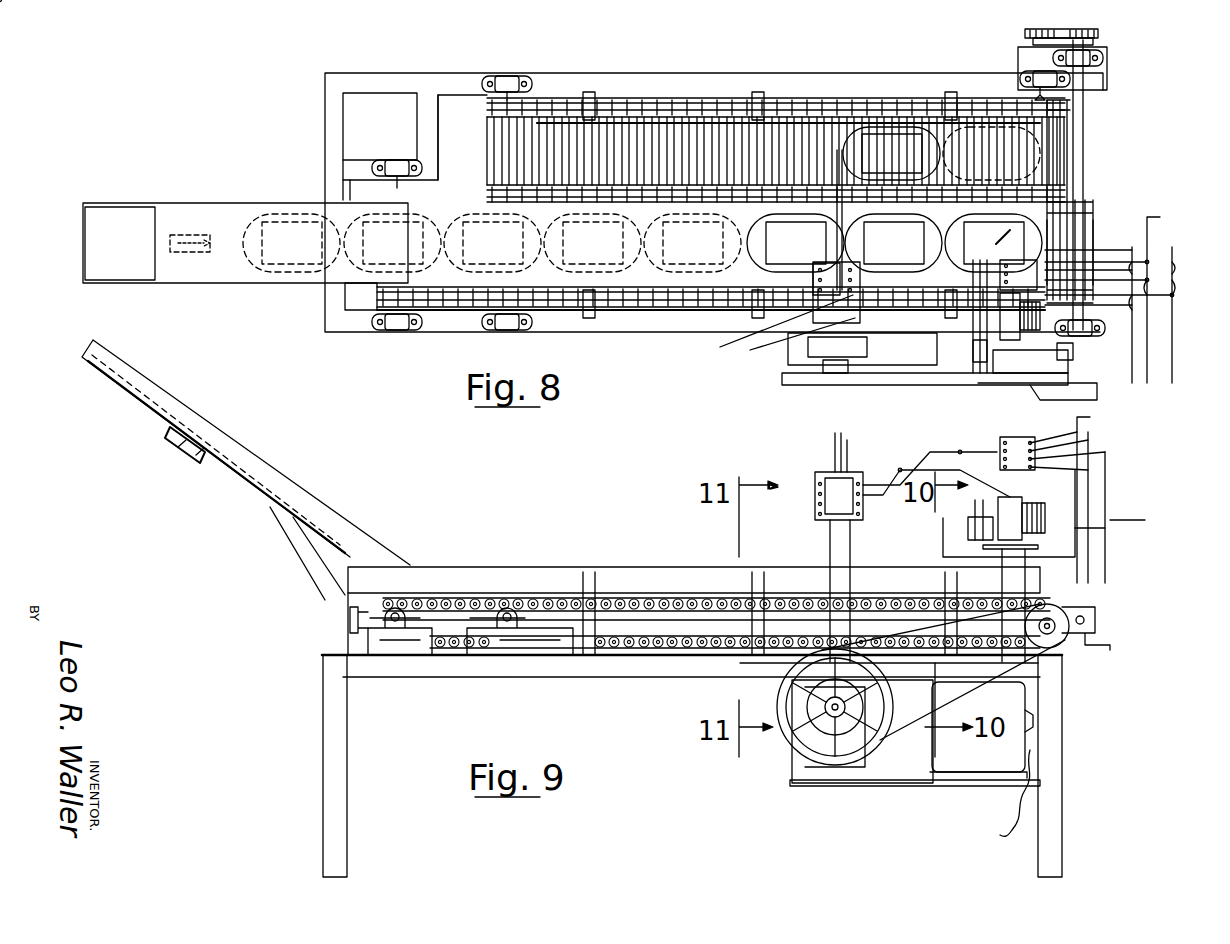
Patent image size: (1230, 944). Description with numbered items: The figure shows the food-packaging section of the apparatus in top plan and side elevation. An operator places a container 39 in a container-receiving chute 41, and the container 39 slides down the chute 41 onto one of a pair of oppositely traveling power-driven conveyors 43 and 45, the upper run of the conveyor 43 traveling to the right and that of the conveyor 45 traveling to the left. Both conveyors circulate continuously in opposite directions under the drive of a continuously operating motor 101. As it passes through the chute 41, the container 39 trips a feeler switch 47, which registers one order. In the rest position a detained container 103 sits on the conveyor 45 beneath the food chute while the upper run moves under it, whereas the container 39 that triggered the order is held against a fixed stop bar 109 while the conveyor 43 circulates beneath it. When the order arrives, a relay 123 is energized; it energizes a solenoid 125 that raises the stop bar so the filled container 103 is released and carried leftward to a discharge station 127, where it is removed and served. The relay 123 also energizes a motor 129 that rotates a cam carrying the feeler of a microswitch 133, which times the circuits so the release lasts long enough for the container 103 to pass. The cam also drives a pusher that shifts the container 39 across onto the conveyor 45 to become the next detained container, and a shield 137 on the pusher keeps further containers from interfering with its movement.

In FIG. 8, the container 39 is at (1087, 160).
In FIG. 9, the container-receiving chute 41 is at (175, 407).
In FIG. 8, the conveyor 43 is at (1083, 233).
In FIG. 9, the conveyor 43 is at (713, 603).
In FIG. 8, the conveyor 45 is at (618, 145).
In FIG. 9, the feeler switch 47 is at (170, 455).
In FIG. 9, the motor 101 is at (973, 755).
In FIG. 8, the container 103 is at (883, 152).
In FIG. 9, the fixed stop bar 109 is at (1067, 583).
In FIG. 8, the relay 123 is at (1017, 440).
In FIG. 9, the solenoid 125 is at (837, 500).
In FIG. 8, the discharge station 127 is at (463, 117).
In FIG. 8, the motor 129 is at (1057, 328).
In FIG. 9, the motor 129 is at (1105, 528).
In FIG. 8, the microswitch 133 is at (977, 327).
In FIG. 9, the microswitch 133 is at (973, 510).
In FIG. 8, the shield 137 is at (973, 355).